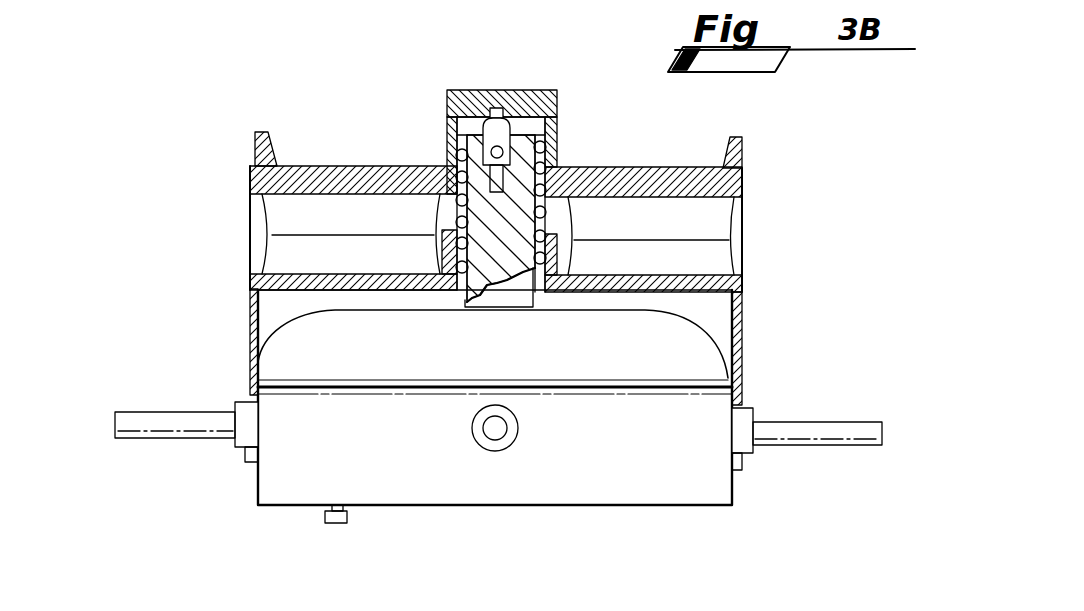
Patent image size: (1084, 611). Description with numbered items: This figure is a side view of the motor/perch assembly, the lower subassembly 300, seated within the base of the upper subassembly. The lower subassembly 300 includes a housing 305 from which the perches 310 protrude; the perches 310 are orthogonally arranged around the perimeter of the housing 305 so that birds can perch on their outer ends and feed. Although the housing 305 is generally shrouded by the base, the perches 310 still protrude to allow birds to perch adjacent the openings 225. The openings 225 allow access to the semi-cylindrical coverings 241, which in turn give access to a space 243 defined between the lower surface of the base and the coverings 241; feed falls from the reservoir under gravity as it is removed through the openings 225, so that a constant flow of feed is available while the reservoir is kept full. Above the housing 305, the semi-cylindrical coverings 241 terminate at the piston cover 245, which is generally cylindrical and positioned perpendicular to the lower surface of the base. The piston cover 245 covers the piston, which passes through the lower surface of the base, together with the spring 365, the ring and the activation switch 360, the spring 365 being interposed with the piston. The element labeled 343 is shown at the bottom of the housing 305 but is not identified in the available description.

The lower subassembly 300 is at (638, 545).
The openings 225 is at (775, 237).
The semi-cylindrical coverings 241 is at (718, 216).
The space 243 is at (668, 267).
The piston cover 245 is at (478, 90).
The activation switch 360 is at (452, 148).
The spring 365 is at (550, 152).
The housing 305 is at (275, 358).
The perches 310 is at (168, 412).
The drain fitting 343 is at (337, 527).